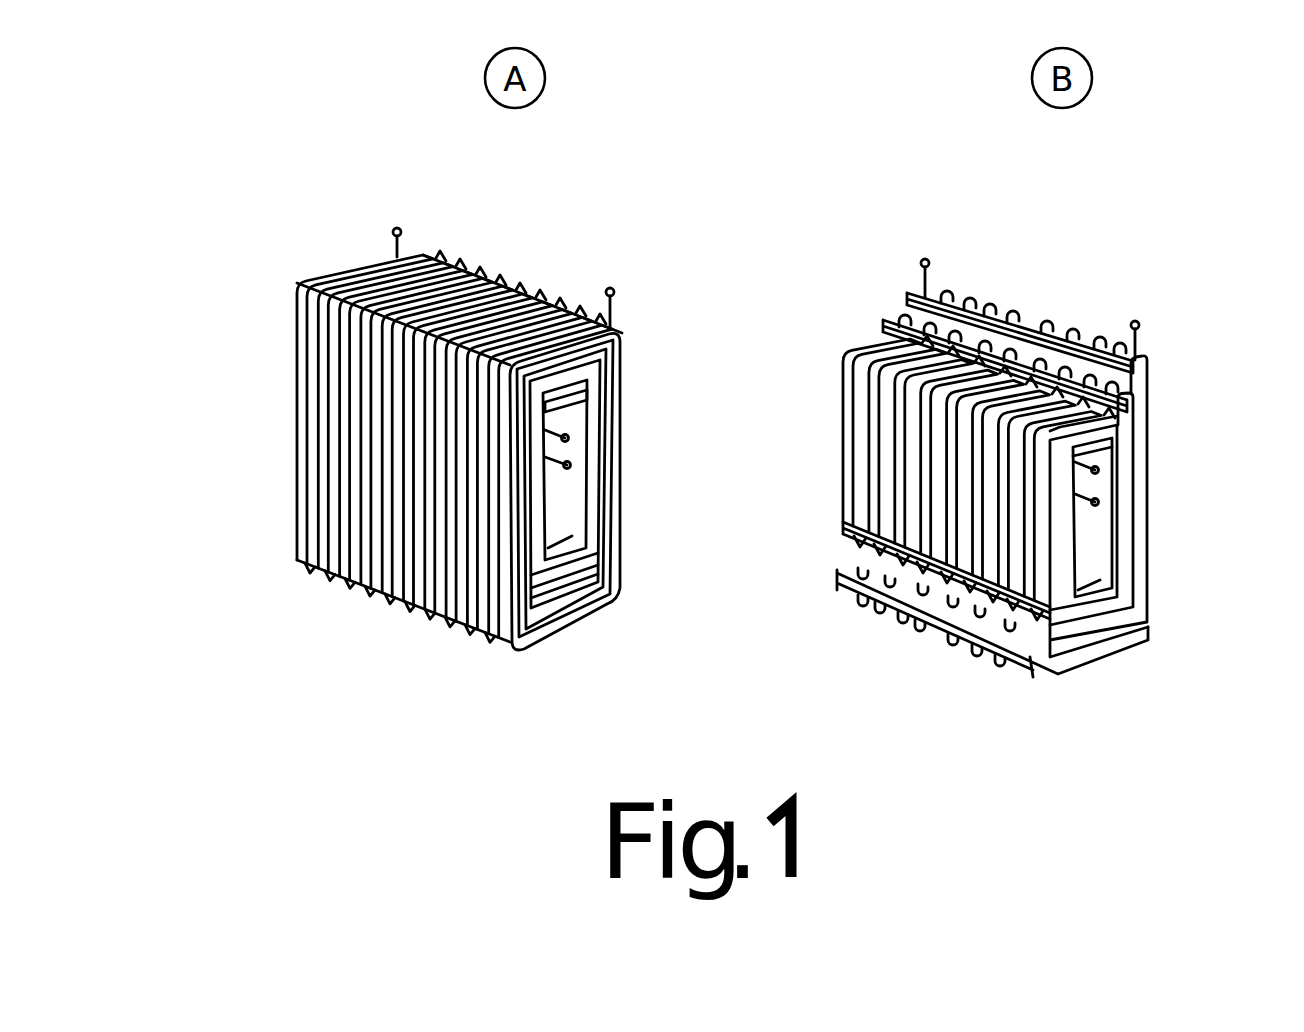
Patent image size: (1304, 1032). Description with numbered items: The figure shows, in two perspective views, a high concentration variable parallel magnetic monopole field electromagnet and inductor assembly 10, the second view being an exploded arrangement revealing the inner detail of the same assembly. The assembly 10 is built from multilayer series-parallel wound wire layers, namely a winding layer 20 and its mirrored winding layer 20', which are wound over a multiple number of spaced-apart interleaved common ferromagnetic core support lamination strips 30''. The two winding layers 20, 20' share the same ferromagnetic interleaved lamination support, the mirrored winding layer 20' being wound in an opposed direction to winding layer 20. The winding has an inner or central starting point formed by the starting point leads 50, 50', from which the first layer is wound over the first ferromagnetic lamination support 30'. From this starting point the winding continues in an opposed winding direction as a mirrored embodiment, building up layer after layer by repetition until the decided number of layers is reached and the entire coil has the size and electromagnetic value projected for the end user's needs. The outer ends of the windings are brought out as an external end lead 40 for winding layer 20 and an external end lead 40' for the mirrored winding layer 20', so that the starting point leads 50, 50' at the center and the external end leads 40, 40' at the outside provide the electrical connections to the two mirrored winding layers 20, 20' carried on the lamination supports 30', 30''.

The assembly 10 is at (292, 247).
The winding layer 20 is at (646, 484).
The mirrored winding layer 20' is at (726, 687).
The first ferromagnetic lamination support 30' is at (892, 495).
The interleaved common ferromagnetic core support lamination strips 30'' is at (896, 492).
The external end lead 40 is at (763, 258).
The external end lead of the mirrored winding layer 40' is at (923, 312).
The starting point lead 50 is at (881, 414).
The starting point lead of the mirrored winding 50' is at (896, 451).